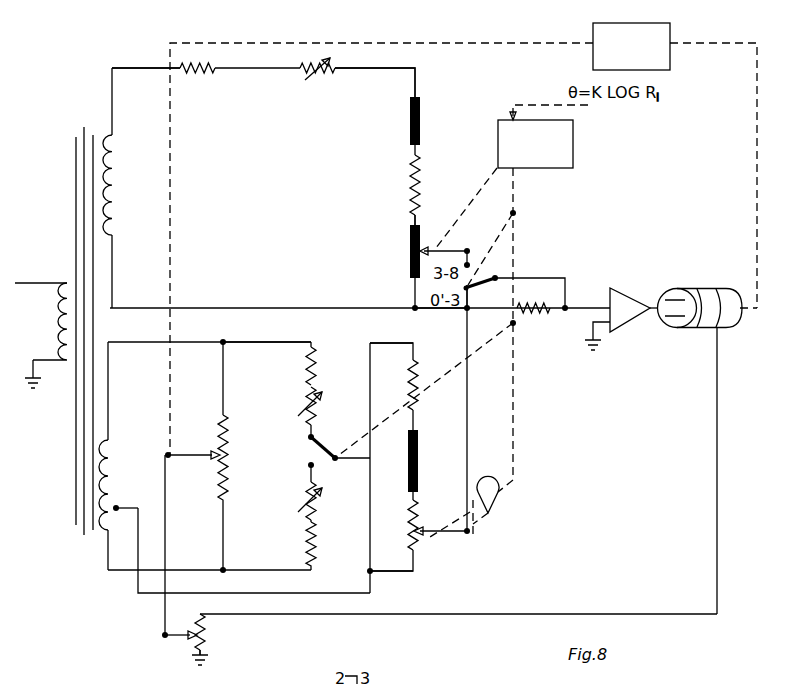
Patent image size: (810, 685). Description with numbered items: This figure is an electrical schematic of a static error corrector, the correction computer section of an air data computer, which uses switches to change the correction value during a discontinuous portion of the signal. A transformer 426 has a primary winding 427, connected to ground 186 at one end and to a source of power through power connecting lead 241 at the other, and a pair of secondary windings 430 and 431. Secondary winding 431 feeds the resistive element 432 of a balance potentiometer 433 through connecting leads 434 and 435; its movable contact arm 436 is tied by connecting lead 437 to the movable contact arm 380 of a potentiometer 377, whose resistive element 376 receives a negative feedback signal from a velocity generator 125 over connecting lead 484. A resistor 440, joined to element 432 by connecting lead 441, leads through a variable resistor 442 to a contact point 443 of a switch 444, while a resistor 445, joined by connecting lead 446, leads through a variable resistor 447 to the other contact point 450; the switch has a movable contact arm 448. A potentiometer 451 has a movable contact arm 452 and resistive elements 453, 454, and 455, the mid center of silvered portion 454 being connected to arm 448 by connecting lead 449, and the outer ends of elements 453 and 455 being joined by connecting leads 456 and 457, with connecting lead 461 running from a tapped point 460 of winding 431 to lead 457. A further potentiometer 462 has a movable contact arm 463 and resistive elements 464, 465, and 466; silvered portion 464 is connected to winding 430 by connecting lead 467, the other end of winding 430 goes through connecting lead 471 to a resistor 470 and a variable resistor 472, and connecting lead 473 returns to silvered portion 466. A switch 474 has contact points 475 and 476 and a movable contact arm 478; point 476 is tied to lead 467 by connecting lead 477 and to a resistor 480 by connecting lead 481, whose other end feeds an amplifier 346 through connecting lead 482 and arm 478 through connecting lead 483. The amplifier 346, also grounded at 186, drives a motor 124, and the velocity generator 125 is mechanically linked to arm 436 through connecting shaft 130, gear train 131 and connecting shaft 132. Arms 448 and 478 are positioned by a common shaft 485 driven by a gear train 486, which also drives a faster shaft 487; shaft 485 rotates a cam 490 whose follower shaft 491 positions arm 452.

The motor 124 is at (703, 328).
The velocity generator 125 is at (724, 330).
The connecting shaft 130 is at (757, 260).
The gear train 131 is at (671, 33).
The connecting shaft 132 is at (488, 43).
The ground 186 is at (598, 345).
The power connecting lead 241 is at (33, 283).
The amplifier 346 is at (628, 296).
The resistive element 376 is at (208, 648).
The potentiometer 377 is at (227, 632).
The movable contact arm 380 is at (196, 655).
The transformer 426 is at (55, 312).
The primary winding 427 is at (54, 320).
The secondary winding 430 is at (114, 168).
The secondary winding 431 is at (113, 464).
The resistive element 432 is at (226, 492).
The potentiometer 433 is at (209, 479).
The connecting lead 434 is at (177, 343).
The connecting lead 435 is at (207, 570).
The movable contact arm 436 is at (170, 460).
The connecting lead 437 is at (165, 533).
The resistor 440 is at (314, 358).
The connecting lead 441 is at (240, 343).
The variable resistor 442 is at (329, 405).
The contact point 443 is at (314, 436).
The switch 444 is at (296, 456).
The resistor 445 is at (314, 562).
The connecting lead 446 is at (270, 560).
The variable resistor 447 is at (329, 501).
The movable contact arm 448 is at (307, 460).
The connecting lead 449 is at (382, 480).
The contact point 450 is at (311, 480).
The potentiometer 451 is at (409, 469).
The movable contact arm 452 is at (444, 536).
The resistive element 453 is at (408, 522).
The silvered portion 454 is at (407, 470).
The resistive element 455 is at (408, 368).
The connecting lead 456 is at (314, 526).
The connecting lead 457 is at (382, 574).
The tapped point 460 is at (131, 498).
The connecting lead 461 is at (291, 594).
The potentiometer 462 is at (399, 197).
The movable contact arm 463 is at (426, 200).
The silvered portion 464 is at (409, 239).
The resistive element 465 is at (410, 190).
The silvered portion 466 is at (410, 130).
The connecting lead 467 is at (323, 308).
The resistor 470 is at (216, 68).
The connecting lead 471 is at (118, 68).
The variable resistor 472 is at (335, 63).
The connecting lead 473 is at (418, 76).
The switch 474 is at (511, 269).
The switch contact point 475 is at (463, 250).
The switch contact point 476 is at (470, 288).
The connecting lead 477 is at (470, 323).
The movable contact arm 478 is at (467, 285).
The resistor 480 is at (533, 300).
The connecting lead 481 is at (518, 310).
The connecting lead 482 is at (588, 302).
The connecting lead 483 is at (565, 280).
The connecting lead 484 is at (581, 614).
The shaft 485 is at (513, 388).
The gear train 486 is at (573, 163).
The shaft 487 is at (475, 185).
The cam 490 is at (488, 476).
The shaft 491 is at (474, 535).